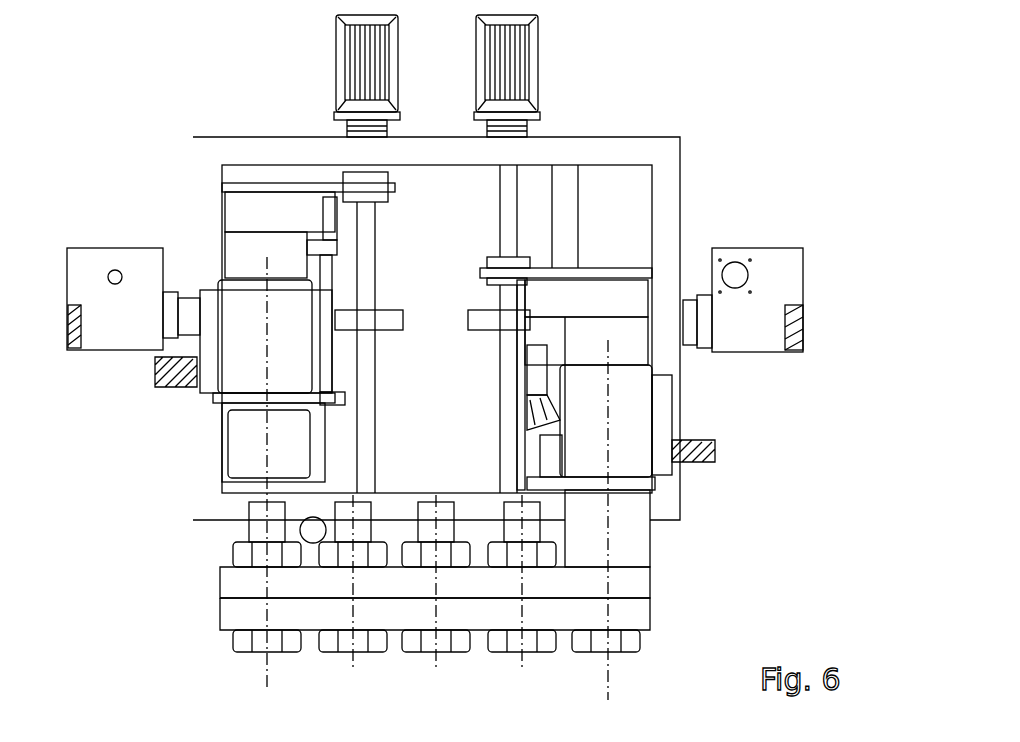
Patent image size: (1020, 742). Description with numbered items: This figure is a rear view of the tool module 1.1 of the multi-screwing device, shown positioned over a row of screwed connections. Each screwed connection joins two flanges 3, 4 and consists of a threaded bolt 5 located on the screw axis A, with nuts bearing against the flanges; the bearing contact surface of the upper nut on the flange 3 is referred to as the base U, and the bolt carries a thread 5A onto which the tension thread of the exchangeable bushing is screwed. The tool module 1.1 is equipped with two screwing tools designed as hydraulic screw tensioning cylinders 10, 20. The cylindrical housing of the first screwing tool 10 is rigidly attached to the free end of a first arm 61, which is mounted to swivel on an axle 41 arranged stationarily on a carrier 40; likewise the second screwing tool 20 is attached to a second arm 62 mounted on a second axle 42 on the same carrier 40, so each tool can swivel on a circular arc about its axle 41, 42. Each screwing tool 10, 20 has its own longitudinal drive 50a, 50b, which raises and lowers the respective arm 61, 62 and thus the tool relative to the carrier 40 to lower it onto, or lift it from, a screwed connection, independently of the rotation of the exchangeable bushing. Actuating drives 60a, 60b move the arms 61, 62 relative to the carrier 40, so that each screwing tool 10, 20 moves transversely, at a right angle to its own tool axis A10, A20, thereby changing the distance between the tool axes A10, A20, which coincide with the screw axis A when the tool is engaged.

The tool module 1.1 is at (748, 100).
The flange 3 is at (232, 582).
The flange 4 is at (232, 606).
The threaded bolt 5 is at (265, 617).
The thread of the threaded bolt 5A is at (258, 528).
The first screwing tool 10 is at (662, 392).
The tool axis A10 is at (612, 497).
The second screwing tool 20 is at (214, 412).
The tool axis A20 is at (267, 458).
The carrier 40 is at (670, 185).
The axle 41 is at (570, 217).
The second axle 42 is at (307, 173).
The longitudinal drive 50a is at (503, 258).
The longitudinal drive 50b is at (357, 185).
The actuating drive 60a is at (772, 287).
The actuating drive 60b is at (83, 248).
The first arm 61 is at (610, 273).
The second arm 62 is at (250, 187).
The base U is at (624, 566).
The screw axis A is at (267, 672).